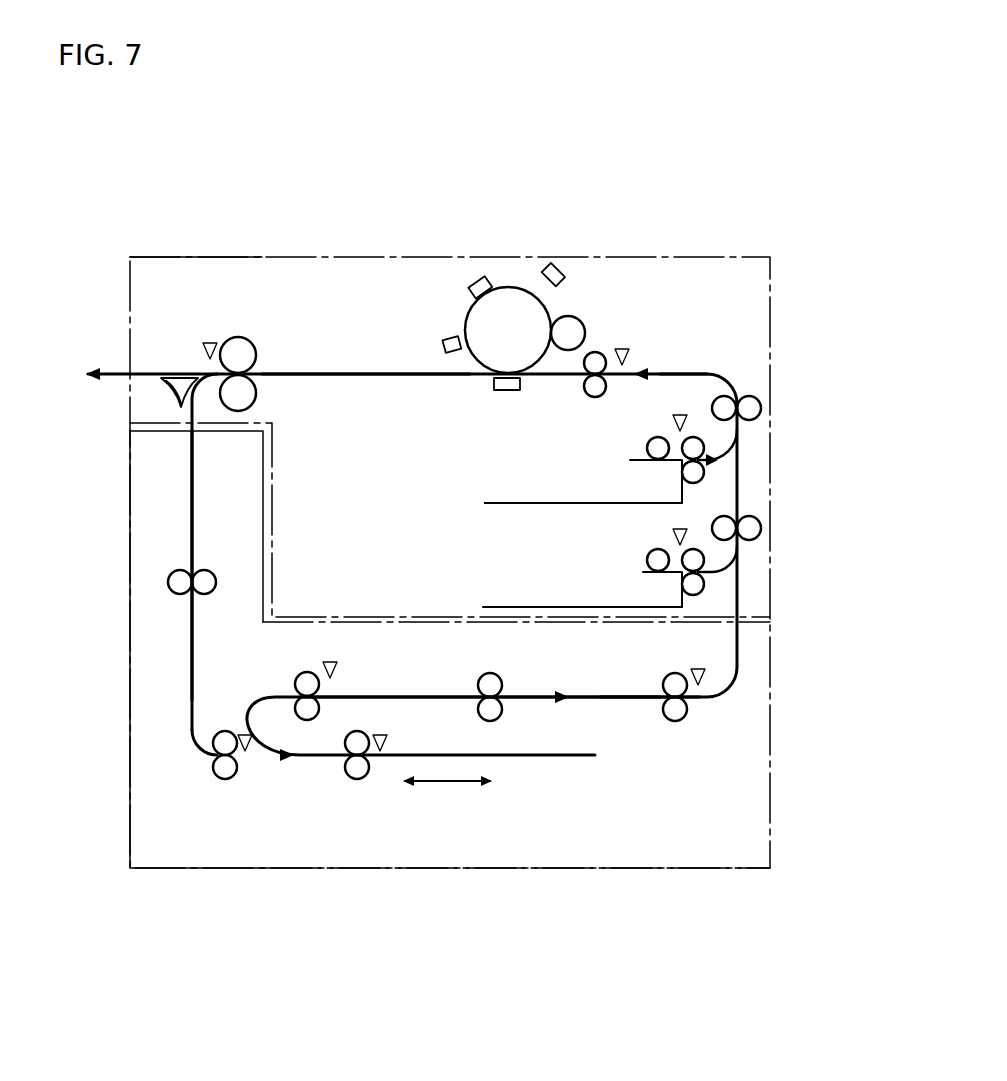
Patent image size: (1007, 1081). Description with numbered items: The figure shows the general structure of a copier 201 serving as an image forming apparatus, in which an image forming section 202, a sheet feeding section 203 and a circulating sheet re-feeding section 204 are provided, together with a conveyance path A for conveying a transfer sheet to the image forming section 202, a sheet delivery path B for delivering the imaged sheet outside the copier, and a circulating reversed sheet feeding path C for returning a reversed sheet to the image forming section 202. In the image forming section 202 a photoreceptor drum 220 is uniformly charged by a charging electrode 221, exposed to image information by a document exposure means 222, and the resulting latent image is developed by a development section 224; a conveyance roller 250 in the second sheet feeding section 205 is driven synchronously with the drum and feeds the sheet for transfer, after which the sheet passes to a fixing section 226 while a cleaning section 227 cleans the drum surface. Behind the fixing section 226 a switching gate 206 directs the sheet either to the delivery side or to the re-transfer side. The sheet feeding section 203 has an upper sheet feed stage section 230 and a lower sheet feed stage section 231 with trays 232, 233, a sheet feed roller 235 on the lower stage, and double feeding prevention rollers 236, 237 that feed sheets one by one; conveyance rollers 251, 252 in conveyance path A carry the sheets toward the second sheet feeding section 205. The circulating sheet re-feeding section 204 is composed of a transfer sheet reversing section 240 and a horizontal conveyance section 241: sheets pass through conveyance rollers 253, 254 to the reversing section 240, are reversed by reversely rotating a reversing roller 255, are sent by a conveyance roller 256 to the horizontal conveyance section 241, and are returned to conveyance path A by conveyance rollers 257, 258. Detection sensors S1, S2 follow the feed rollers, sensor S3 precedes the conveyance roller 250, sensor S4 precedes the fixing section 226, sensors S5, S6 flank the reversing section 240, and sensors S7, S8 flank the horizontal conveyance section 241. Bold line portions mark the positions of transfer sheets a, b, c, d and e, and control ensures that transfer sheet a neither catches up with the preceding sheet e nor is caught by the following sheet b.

The copier 201 is at (259, 246).
The image forming section 202 is at (460, 318).
The sheet feeding section 203 is at (486, 509).
The circulating sheet re-feeding section 204 is at (182, 870).
The second sheet feeding section 205 is at (613, 400).
The switching gate 206 is at (160, 394).
The photoreceptor drum 220 is at (514, 300).
The charging electrode 221 is at (478, 280).
The document exposure means 222 is at (556, 268).
The development section 224 is at (580, 320).
The fixing section 226 is at (258, 352).
The cleaning section 227 is at (446, 346).
The upper sheet feed stage section 230 is at (506, 512).
The lower sheet feed stage section 231 is at (532, 603).
The tray 232 is at (547, 504).
The tray 233 is at (608, 607).
The sheet feed roller 235 is at (652, 553).
The double feeding prevention roller 236 is at (708, 472).
The double feeding prevention roller 237 is at (708, 582).
The transfer sheet reversing section 240 is at (376, 772).
The horizontal conveyance section 241 is at (468, 688).
The conveyance roller 250 is at (582, 398).
The conveyance roller 251 is at (761, 406).
The conveyance roller 252 is at (756, 540).
The conveyance roller 253 is at (168, 581).
The conveyance roller 254 is at (213, 770).
The reversing roller 255 is at (500, 392).
The conveyance roller 256 is at (298, 682).
The conveyance roller 257 is at (500, 678).
The conveyance roller 258 is at (668, 678).
The detection sensor S1 is at (684, 414).
The detection sensor S2 is at (686, 527).
The detection sensor S3 is at (626, 349).
The detection sensor S4 is at (209, 342).
The detection sensor S5 is at (244, 737).
The detection sensor S6 is at (385, 740).
The detection sensor S7 is at (330, 661).
The detection sensor S8 is at (707, 679).
The conveyance path A is at (748, 456).
The sheet delivery path B is at (108, 360).
The circulating reversed sheet feeding path C is at (590, 722).
The transfer sheet a is at (632, 700).
The transfer sheet b is at (486, 777).
The transfer sheet c is at (190, 626).
The transfer sheet d is at (330, 372).
The transfer sheet e is at (690, 372).